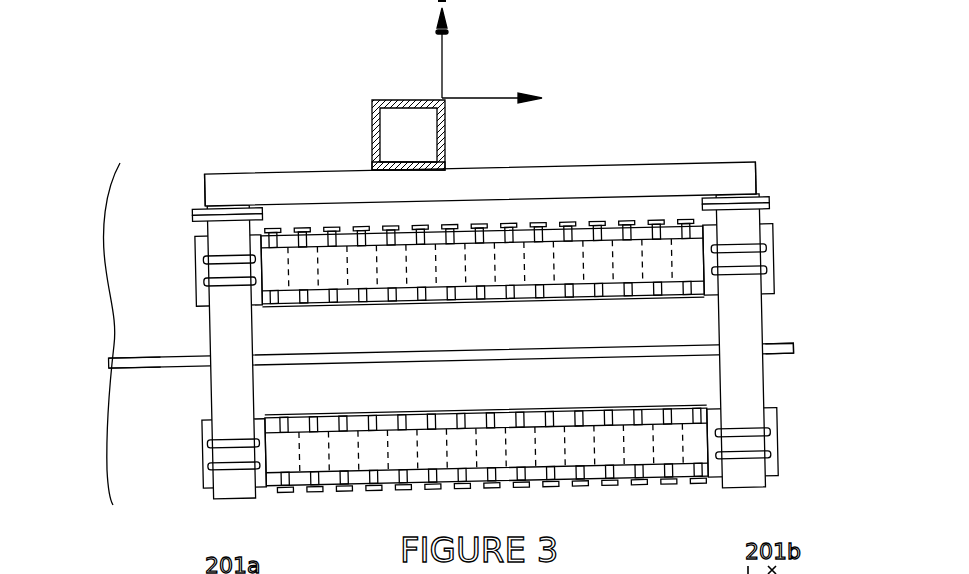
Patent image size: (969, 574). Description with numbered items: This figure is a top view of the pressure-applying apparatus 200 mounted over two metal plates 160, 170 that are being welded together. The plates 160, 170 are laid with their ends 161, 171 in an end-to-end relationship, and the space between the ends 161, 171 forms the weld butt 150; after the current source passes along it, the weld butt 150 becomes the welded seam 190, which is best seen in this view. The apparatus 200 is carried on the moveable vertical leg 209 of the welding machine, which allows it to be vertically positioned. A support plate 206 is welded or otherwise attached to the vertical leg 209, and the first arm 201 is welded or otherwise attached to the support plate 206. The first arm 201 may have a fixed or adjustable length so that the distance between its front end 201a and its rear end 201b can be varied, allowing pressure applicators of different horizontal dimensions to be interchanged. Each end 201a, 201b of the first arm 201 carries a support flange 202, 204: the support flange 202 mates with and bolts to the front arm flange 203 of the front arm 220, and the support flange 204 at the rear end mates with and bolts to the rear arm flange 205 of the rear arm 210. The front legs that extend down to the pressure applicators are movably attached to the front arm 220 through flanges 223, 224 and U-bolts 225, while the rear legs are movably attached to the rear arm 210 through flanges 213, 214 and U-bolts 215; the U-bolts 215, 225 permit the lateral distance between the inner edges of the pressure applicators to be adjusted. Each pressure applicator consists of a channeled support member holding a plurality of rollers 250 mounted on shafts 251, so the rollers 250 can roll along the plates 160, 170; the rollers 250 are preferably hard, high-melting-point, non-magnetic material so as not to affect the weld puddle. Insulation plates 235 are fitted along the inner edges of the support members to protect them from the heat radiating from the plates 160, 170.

The apparatus 200 is at (180, 122).
The first arm 201 is at (262, 186).
The front end of first arm 201a is at (207, 148).
The rear end of first arm 201b is at (760, 138).
The support flange 202 is at (196, 211).
The front arm flange 203 is at (196, 218).
The support flange 204 is at (770, 198).
The rear arm flange 205 is at (773, 208).
The support plate 206 is at (376, 170).
The moveable vertical leg 209 is at (441, 100).
The rear arm 210 is at (750, 375).
The flange 213 is at (777, 240).
The flange 214 is at (776, 413).
The U-bolts 215 is at (766, 276).
The front arm 220 is at (237, 338).
The flange 223 is at (198, 247).
The flange 224 is at (200, 427).
The U-bolts 225 is at (204, 281).
The insulation plates 235 is at (503, 299).
The rollers 250 is at (402, 277).
The shafts 251 is at (564, 299).
The weld butt 150 is at (114, 355).
The metal plate 160 is at (122, 413).
The end of metal plate 161 is at (126, 371).
The metal plate 170 is at (112, 288).
The end of metal plate 171 is at (131, 352).
The welded seam 190 is at (777, 348).